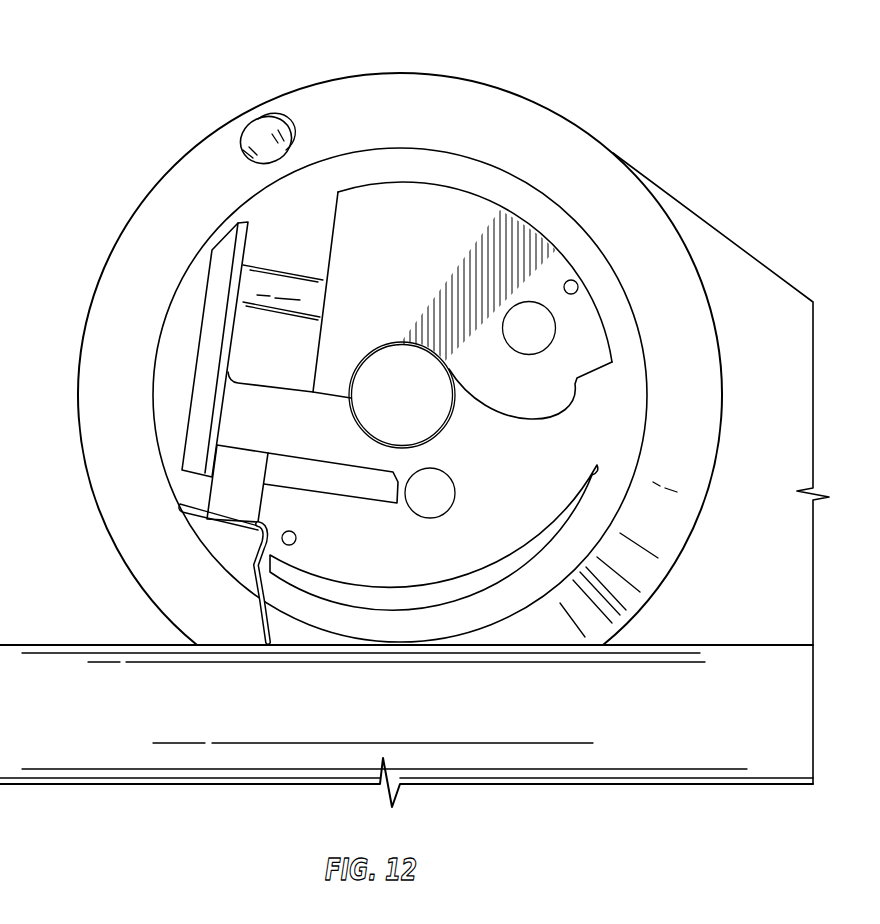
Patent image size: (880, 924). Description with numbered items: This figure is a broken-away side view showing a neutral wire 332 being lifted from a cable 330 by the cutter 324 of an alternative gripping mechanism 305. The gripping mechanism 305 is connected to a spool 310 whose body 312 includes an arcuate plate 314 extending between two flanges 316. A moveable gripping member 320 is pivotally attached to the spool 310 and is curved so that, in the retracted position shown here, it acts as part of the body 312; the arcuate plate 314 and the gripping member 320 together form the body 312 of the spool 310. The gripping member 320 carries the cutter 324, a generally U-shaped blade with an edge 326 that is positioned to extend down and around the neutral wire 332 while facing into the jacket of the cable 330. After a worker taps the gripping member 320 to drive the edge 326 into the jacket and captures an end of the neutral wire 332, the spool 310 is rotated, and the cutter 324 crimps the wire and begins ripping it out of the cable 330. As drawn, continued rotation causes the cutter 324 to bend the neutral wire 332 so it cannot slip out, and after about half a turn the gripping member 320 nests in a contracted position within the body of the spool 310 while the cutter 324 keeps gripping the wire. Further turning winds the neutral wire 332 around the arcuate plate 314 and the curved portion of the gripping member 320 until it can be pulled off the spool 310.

The gripping mechanism 305 is at (178, 346).
The spool 310 is at (513, 94).
The body 312 is at (463, 602).
The arcuate plate 314 is at (528, 537).
The flanges 316 is at (331, 118).
The moveable gripping member 320 is at (440, 183).
The cutter 324 is at (222, 493).
The edge 326 is at (270, 497).
The cable 330 is at (625, 783).
The neutral wire 332 is at (258, 615).